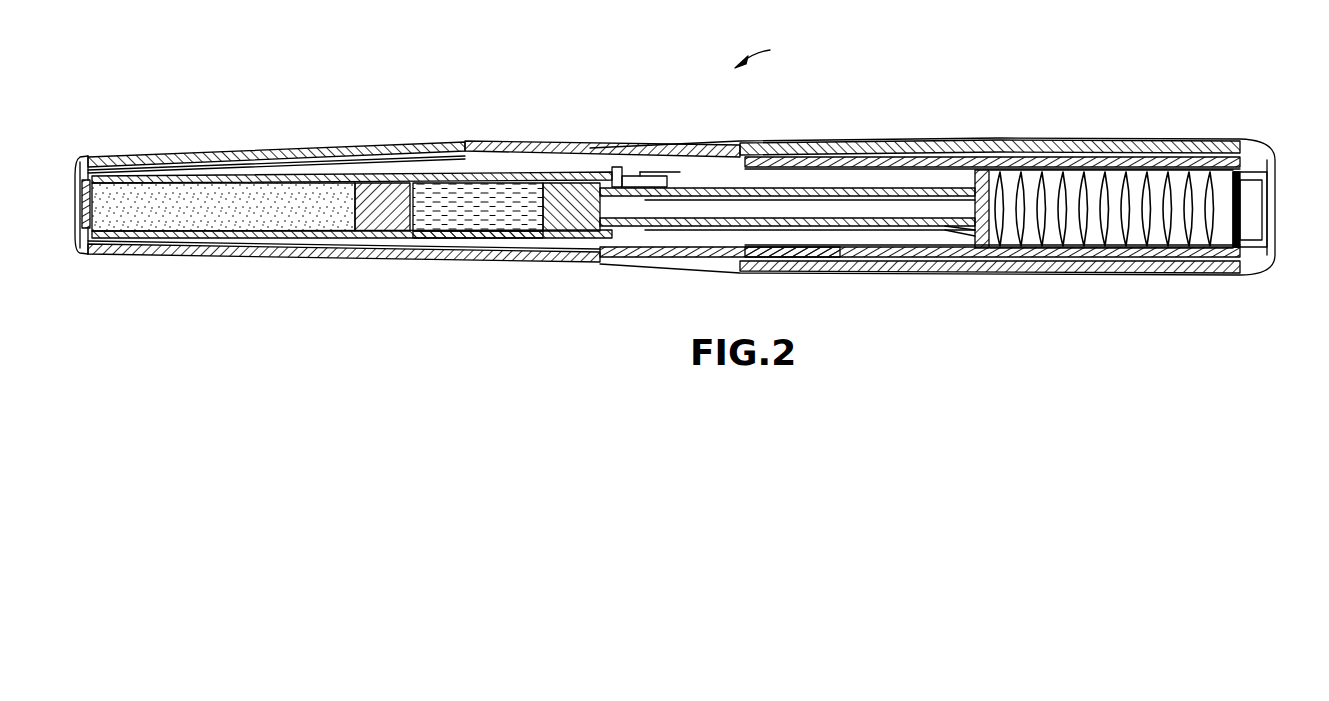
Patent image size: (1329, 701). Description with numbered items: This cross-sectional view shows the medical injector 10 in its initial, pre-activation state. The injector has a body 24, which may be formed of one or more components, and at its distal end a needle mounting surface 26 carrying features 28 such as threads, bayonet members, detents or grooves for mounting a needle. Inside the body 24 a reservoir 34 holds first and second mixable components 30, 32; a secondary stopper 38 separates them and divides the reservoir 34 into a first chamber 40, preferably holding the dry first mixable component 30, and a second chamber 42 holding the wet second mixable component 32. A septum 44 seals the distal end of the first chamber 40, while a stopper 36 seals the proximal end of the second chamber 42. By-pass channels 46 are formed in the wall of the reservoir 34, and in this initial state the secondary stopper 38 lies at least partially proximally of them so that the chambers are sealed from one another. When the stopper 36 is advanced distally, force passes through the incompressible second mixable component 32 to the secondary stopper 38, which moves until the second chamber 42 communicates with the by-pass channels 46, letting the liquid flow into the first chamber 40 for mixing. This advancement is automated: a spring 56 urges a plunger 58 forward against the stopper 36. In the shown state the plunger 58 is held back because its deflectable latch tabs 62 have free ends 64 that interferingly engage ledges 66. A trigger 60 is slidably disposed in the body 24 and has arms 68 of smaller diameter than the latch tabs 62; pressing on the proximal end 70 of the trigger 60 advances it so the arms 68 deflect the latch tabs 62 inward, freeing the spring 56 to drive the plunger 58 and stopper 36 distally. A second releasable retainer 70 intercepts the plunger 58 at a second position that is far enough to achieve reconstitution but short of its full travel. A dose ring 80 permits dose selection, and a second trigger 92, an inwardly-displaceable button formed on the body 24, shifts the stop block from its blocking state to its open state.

The medical injector 10 is at (767, 49).
The body 24 is at (806, 140).
The needle mounting surface 26 is at (82, 158).
The features 28 is at (95, 256).
The first mixable component 30 is at (242, 215).
The second mixable component 32 is at (470, 225).
The reservoir 34 is at (395, 172).
The stopper 36 is at (566, 246).
The secondary stopper 38 is at (382, 238).
The first chamber 40 is at (312, 232).
The second chamber 42 is at (522, 236).
The septum 44 is at (78, 215).
The by-pass channels 46 is at (313, 160).
The spring 56 is at (1110, 260).
The plunger 58 is at (848, 232).
The trigger 60 is at (1268, 262).
The latch tabs 62 is at (968, 160).
The free ends 64 is at (966, 258).
The ledges 66 is at (932, 258).
The arms 68 is at (1070, 158).
The proximal end 70 is at (640, 178).
The dose ring 80 is at (632, 262).
The second trigger 92 is at (563, 141).